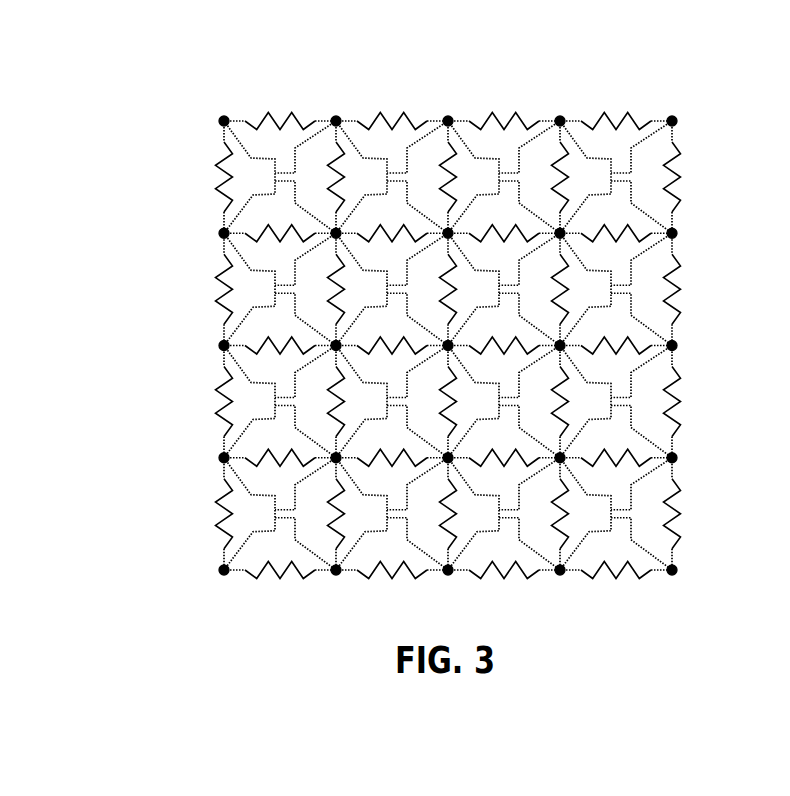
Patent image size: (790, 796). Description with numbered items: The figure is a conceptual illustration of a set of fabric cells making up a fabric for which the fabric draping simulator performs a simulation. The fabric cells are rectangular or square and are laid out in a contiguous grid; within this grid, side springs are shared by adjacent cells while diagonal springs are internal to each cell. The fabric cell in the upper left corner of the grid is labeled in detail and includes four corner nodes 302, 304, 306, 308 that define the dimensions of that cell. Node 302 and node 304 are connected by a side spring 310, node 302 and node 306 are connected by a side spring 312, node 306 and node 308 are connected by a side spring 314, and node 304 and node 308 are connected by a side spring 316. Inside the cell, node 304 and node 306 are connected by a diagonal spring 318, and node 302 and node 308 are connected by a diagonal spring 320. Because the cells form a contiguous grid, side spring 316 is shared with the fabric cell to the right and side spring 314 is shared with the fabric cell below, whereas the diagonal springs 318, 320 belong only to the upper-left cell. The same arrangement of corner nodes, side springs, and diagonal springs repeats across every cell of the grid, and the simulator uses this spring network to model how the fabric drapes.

The corner node 302 is at (223, 117).
The corner node 304 is at (336, 117).
The corner node 306 is at (225, 236).
The corner node 308 is at (335, 236).
The side spring 310 is at (271, 116).
The side spring 312 is at (230, 156).
The side spring 314 is at (284, 234).
The side spring 316 is at (330, 163).
The diagonal spring 318 is at (287, 168).
The diagonal spring 320 is at (295, 200).